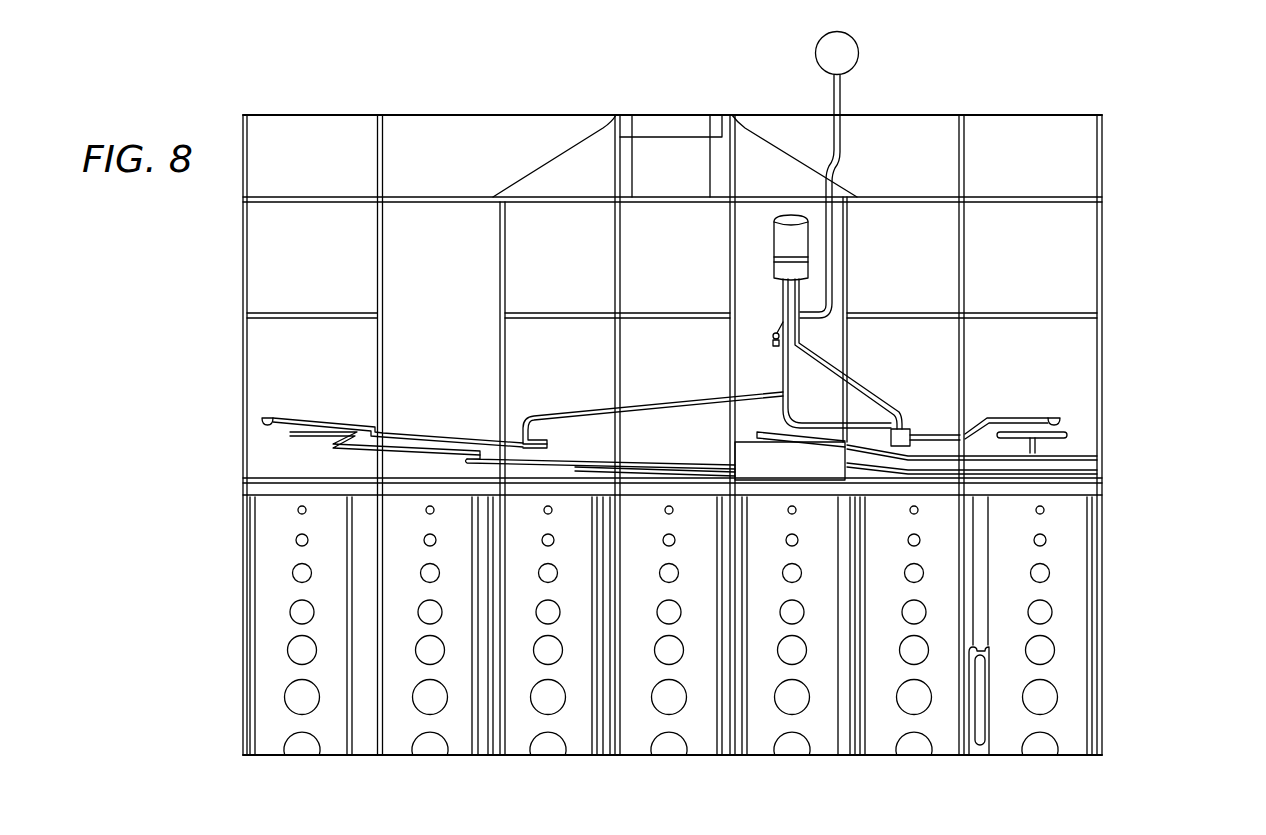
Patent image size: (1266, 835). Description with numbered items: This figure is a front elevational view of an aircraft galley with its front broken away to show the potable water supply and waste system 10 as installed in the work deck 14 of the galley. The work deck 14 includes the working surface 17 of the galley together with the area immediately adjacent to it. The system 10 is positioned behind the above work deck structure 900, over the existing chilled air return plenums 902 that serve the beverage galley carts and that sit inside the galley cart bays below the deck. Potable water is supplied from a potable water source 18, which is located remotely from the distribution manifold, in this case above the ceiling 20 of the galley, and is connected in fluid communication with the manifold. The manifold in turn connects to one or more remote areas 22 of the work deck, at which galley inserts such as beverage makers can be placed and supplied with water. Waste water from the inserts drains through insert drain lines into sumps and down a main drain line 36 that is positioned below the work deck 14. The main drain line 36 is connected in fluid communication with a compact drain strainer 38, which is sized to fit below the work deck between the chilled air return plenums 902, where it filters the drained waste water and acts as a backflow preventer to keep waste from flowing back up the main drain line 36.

The potable water supply and waste system 10 is at (666, 386).
The work deck 14 is at (1170, 378).
The working surface 17 is at (700, 488).
The potable water source 18 is at (858, 54).
The ceiling 20 is at (1080, 117).
The remote area 22 is at (285, 453).
The main drain line 36 is at (977, 617).
The compact drain strainer 38 is at (980, 737).
The above work deck structure 900 is at (963, 220).
The chilled air return plenum 902 is at (280, 627).